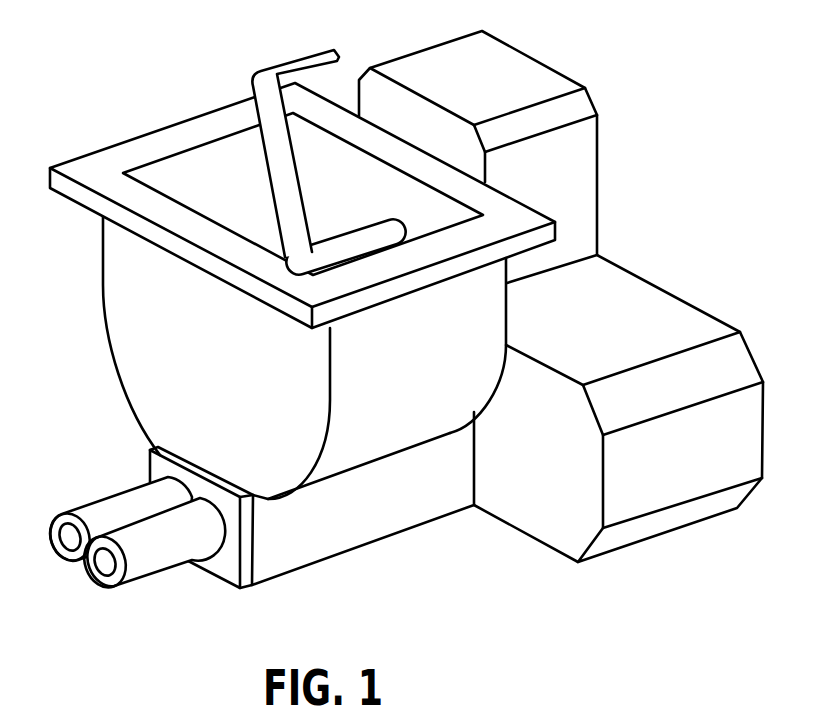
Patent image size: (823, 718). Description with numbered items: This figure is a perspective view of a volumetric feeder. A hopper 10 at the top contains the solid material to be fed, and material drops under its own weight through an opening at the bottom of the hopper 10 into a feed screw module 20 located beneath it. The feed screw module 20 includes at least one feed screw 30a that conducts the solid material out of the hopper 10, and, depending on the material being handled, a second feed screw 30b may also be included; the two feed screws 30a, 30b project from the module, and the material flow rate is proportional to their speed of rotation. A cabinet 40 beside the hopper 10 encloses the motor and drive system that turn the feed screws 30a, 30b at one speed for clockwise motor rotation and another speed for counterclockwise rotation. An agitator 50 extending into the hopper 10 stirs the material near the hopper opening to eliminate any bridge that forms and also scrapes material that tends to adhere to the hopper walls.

The hopper 10 is at (103, 288).
The feed screw module 20 is at (303, 568).
The feed screw 30a is at (51, 537).
The second feed screw 30b is at (108, 584).
The cabinet 40 is at (660, 288).
The agitator 50 is at (275, 68).